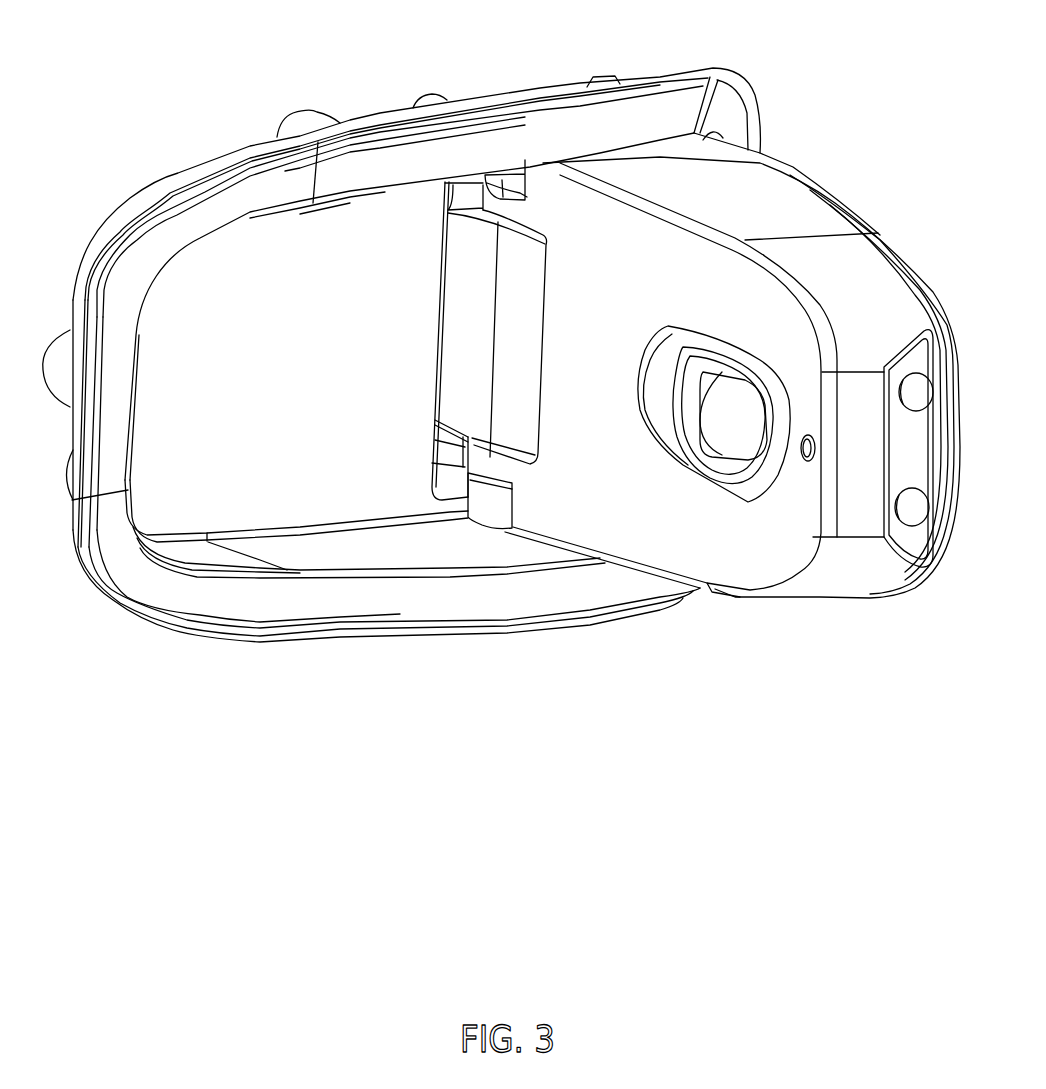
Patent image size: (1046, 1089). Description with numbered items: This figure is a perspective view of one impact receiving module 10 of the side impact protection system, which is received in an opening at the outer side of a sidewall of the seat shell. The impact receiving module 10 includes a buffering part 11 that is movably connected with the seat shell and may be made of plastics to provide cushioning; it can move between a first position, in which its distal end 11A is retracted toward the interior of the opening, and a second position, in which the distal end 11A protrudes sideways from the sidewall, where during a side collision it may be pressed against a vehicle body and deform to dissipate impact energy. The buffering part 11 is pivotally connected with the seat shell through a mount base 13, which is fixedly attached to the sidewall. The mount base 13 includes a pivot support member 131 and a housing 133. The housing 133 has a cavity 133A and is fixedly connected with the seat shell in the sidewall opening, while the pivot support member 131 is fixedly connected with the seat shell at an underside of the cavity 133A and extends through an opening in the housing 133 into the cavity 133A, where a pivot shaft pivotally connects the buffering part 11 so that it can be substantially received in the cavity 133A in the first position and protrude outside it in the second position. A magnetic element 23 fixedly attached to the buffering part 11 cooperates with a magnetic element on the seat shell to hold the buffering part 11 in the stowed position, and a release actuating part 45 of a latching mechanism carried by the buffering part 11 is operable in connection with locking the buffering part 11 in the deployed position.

The impact receiving module 10 is at (533, 843).
The buffering part 11 is at (699, 550).
The distal end 11A is at (884, 578).
The mount base 13 is at (482, 803).
The pivot support member 131 is at (466, 385).
The housing 133 is at (527, 600).
The cavity 133A is at (250, 270).
The magnetic element 23 is at (806, 460).
The release actuating part 45 is at (727, 397).